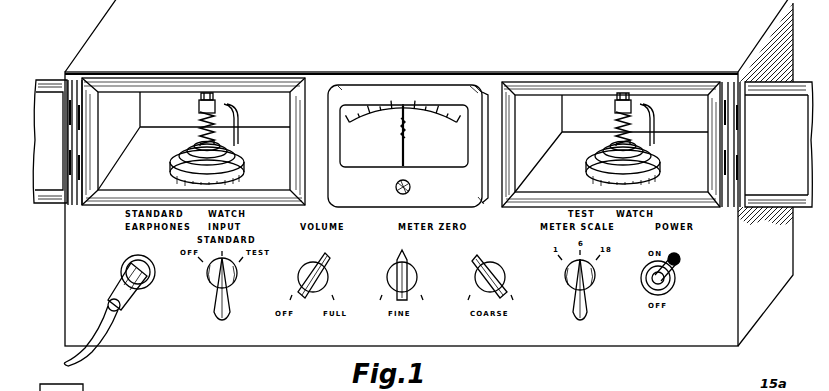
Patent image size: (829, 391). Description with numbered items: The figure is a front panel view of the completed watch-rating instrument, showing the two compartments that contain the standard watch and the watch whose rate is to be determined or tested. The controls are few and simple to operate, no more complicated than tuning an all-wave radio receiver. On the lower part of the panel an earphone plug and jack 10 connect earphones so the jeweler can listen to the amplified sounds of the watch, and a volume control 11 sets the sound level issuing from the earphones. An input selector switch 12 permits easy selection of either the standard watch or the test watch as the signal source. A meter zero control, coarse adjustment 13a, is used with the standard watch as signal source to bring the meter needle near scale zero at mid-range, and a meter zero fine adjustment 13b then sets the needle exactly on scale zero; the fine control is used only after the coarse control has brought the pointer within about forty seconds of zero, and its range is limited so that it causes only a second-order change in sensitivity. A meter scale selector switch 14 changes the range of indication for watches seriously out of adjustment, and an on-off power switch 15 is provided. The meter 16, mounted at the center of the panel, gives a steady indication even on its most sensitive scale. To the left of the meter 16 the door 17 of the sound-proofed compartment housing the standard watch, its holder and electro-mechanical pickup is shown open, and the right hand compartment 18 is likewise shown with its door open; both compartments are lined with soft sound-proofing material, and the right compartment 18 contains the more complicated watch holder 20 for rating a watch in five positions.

The earphone plug and jack 10 is at (136, 289).
The volume control 11 is at (298, 279).
The input selector switch 12 is at (213, 287).
The meter zero control, coarse adjustment 13a is at (505, 283).
The meter zero, fine adjustment 13b is at (416, 273).
The meter scale selector switch 14 is at (589, 290).
The on-off power switch 15 is at (672, 280).
The meter 16 is at (373, 202).
The door 17 is at (55, 185).
The right hand compartment 18 is at (777, 183).
The watch holder 20 is at (652, 150).